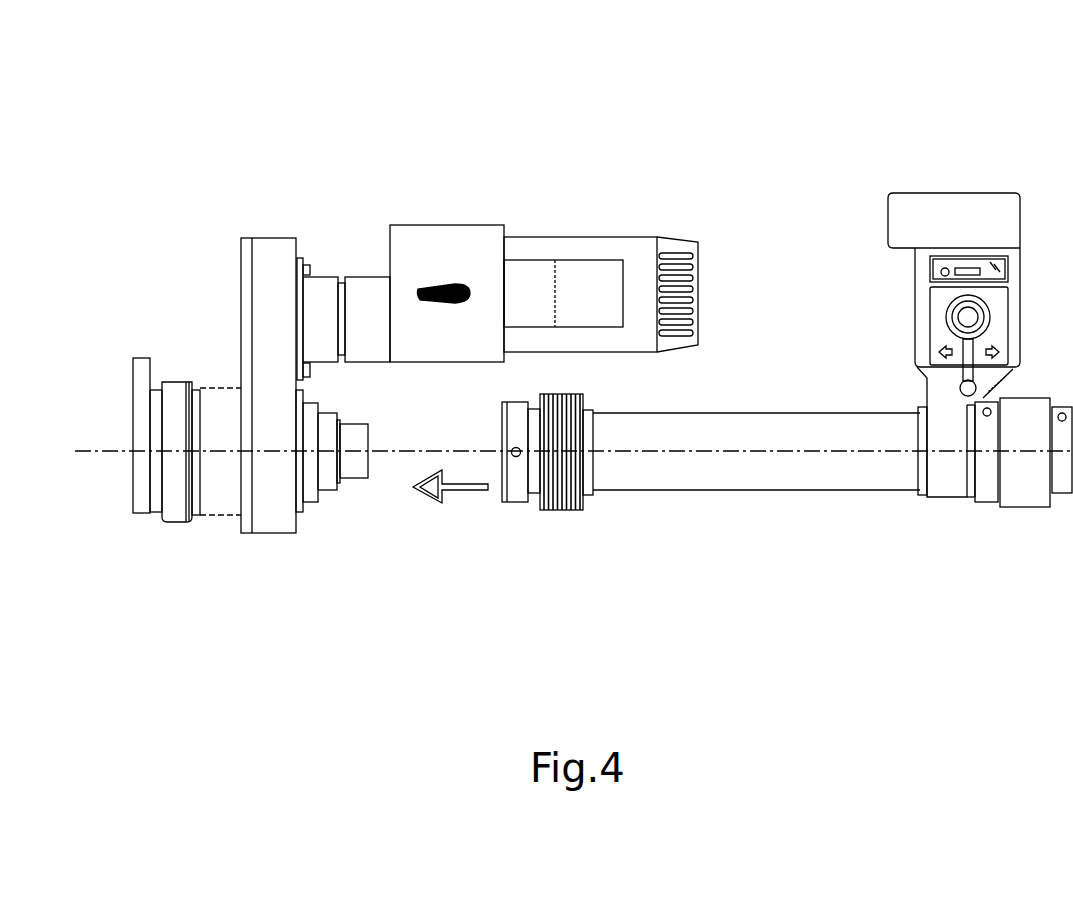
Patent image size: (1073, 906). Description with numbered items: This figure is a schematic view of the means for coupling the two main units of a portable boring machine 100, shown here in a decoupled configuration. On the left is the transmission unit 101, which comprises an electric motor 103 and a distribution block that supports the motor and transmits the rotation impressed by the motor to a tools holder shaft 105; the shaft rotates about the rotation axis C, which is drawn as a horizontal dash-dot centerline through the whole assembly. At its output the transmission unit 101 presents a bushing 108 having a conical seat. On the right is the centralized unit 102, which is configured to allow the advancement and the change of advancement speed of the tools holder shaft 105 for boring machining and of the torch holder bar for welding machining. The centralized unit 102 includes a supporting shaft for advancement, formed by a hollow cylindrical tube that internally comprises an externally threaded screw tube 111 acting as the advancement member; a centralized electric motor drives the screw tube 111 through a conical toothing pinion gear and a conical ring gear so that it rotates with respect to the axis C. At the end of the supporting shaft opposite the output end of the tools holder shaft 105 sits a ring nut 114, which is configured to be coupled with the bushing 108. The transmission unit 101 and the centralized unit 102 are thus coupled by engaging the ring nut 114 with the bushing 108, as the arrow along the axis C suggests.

The portable boring machine 100 is at (205, 120).
The transmission unit 101 is at (417, 193).
The centralized unit 102 is at (937, 175).
The electric motor 103 is at (443, 230).
The tools holder shaft 105 is at (692, 483).
The bushing 108 is at (353, 465).
The screw tube 111 is at (960, 193).
The ring nut 114 is at (519, 483).
The rotation axis C is at (100, 451).